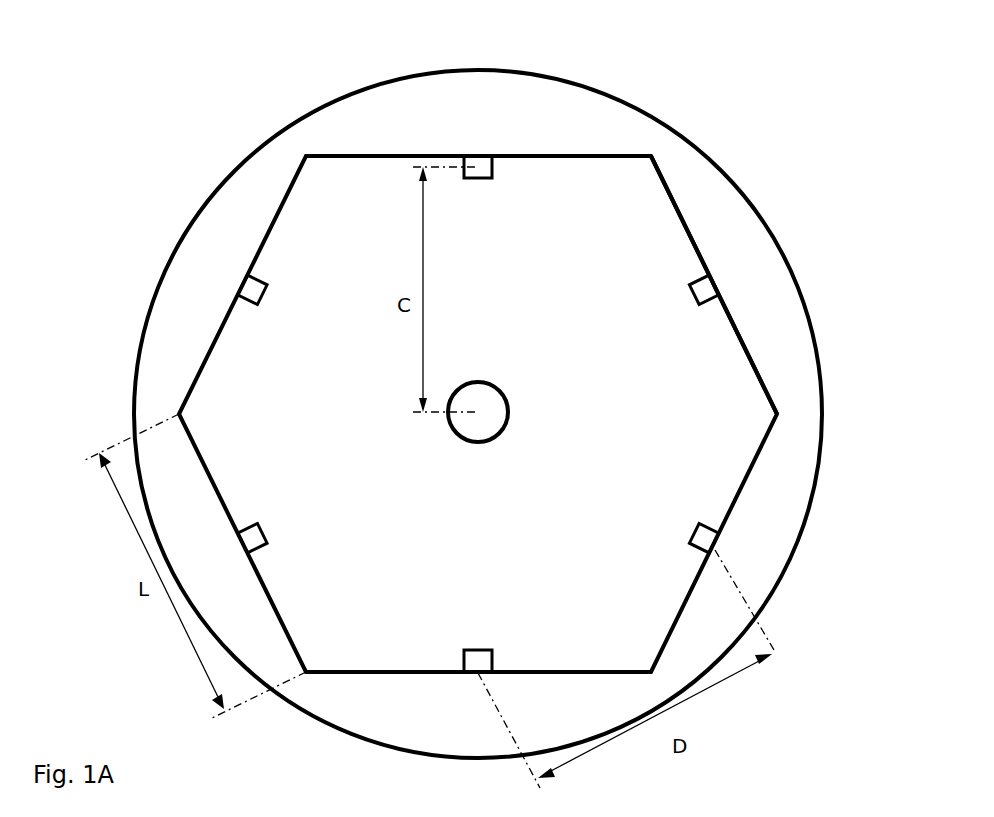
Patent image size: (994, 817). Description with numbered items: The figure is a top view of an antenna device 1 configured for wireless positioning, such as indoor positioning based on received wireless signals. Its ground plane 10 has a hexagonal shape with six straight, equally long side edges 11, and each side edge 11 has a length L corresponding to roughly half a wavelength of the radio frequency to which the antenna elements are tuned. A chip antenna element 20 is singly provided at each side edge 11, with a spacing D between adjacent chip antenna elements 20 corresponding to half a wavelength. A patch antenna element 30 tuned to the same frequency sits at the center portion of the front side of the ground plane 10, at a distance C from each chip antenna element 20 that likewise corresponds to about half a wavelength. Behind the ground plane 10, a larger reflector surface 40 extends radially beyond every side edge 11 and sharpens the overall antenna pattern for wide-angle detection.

The antenna device 1 is at (85, 113).
The ground plane 10 is at (289, 235).
The side edge 11 is at (694, 231).
The chip antenna element 20 is at (708, 288).
The patch antenna element 30 is at (492, 395).
The reflector surface 40 is at (533, 88).